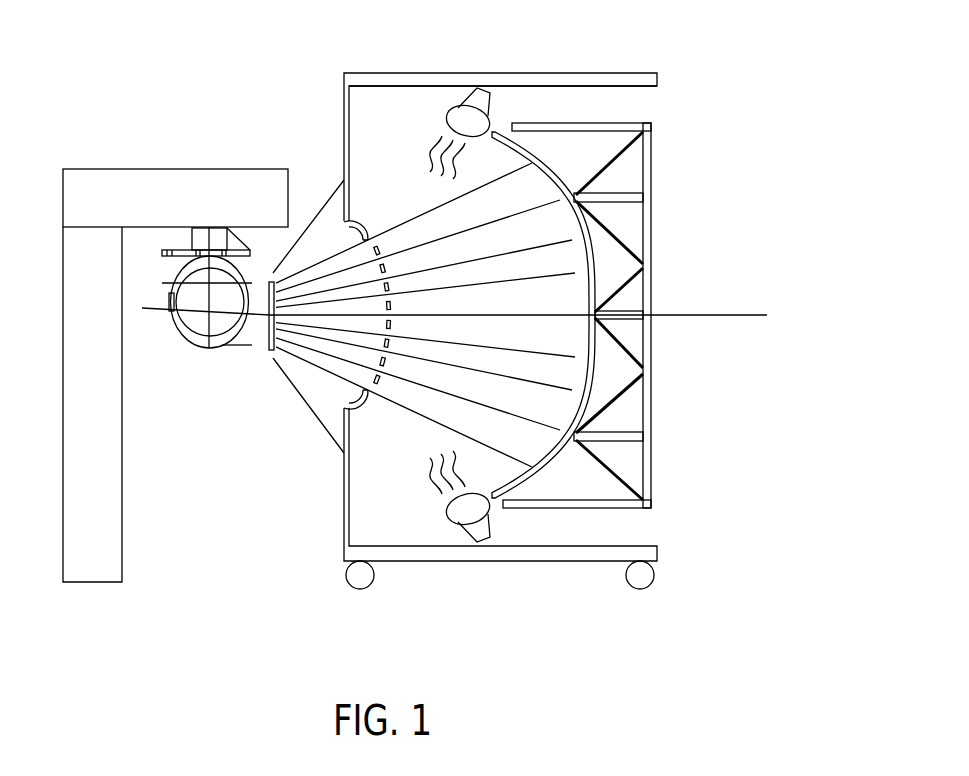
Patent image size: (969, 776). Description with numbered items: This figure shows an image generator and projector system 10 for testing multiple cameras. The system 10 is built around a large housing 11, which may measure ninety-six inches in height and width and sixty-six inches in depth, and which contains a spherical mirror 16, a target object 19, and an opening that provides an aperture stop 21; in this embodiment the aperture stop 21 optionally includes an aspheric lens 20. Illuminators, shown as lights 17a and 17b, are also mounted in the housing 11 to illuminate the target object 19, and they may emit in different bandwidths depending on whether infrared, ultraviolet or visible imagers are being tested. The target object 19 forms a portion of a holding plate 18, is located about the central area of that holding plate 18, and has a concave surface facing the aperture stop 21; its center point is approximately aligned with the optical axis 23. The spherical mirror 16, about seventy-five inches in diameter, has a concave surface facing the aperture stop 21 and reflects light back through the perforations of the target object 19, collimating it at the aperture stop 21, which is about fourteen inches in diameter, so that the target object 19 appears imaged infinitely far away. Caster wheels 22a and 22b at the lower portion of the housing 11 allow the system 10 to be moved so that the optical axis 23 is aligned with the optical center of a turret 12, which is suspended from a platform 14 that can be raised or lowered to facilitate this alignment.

The image generator and projector system 10 is at (401, 118).
The housing 11 is at (618, 72).
The turret 12 is at (192, 322).
The platform 14 is at (95, 180).
The spherical mirror 16 is at (563, 170).
The light 17a is at (490, 96).
The light 17b is at (452, 512).
The holding plate 18 is at (343, 494).
The target object 19 is at (379, 250).
The aspheric lens 20 is at (268, 340).
The aperture stop 21 is at (273, 363).
The caster wheel 22a is at (363, 589).
The caster wheel 22b is at (640, 589).
The optical axis 23 is at (728, 318).